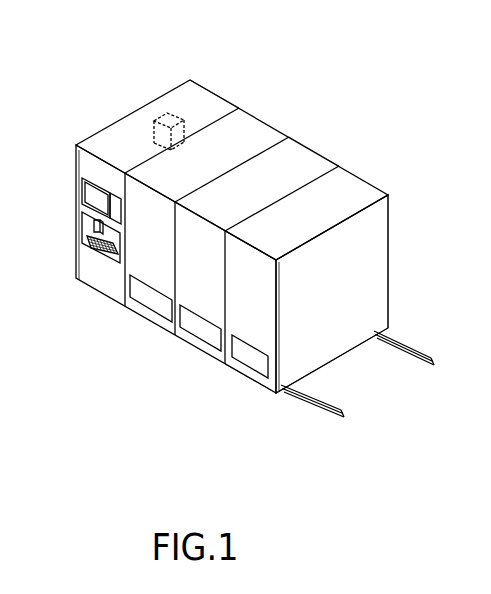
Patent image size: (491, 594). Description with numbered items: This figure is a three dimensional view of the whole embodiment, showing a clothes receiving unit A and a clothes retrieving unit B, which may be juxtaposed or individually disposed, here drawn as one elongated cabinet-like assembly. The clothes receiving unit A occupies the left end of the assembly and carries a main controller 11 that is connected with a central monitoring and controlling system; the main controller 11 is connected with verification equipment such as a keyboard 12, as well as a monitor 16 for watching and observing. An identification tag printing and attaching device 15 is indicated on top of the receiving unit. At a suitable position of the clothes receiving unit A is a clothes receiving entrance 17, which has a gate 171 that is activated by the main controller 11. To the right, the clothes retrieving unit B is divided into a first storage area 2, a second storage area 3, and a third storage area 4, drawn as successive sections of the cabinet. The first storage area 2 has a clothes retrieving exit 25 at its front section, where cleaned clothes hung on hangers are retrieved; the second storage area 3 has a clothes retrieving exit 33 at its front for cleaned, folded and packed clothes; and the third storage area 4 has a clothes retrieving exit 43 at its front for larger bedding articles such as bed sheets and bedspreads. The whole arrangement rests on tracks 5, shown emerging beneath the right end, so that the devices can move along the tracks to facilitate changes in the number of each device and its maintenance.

The first storage area 2 is at (263, 117).
The second storage area 3 is at (307, 147).
The third storage area 4 is at (359, 174).
The tracks 5 is at (327, 398).
The main controller 11 is at (103, 232).
The keyboard 12 is at (88, 247).
The identification tag printing and attaching device 15 is at (168, 116).
The monitor 16 is at (98, 223).
The clothes receiving entrance 17 is at (118, 210).
The gate 171 is at (83, 192).
The clothes retrieving exit 25 is at (152, 313).
The clothes retrieving exit 33 is at (200, 341).
The clothes retrieving exit 43 is at (250, 368).
The clothes receiving unit A is at (221, 93).
The clothes retrieving unit B is at (319, 146).